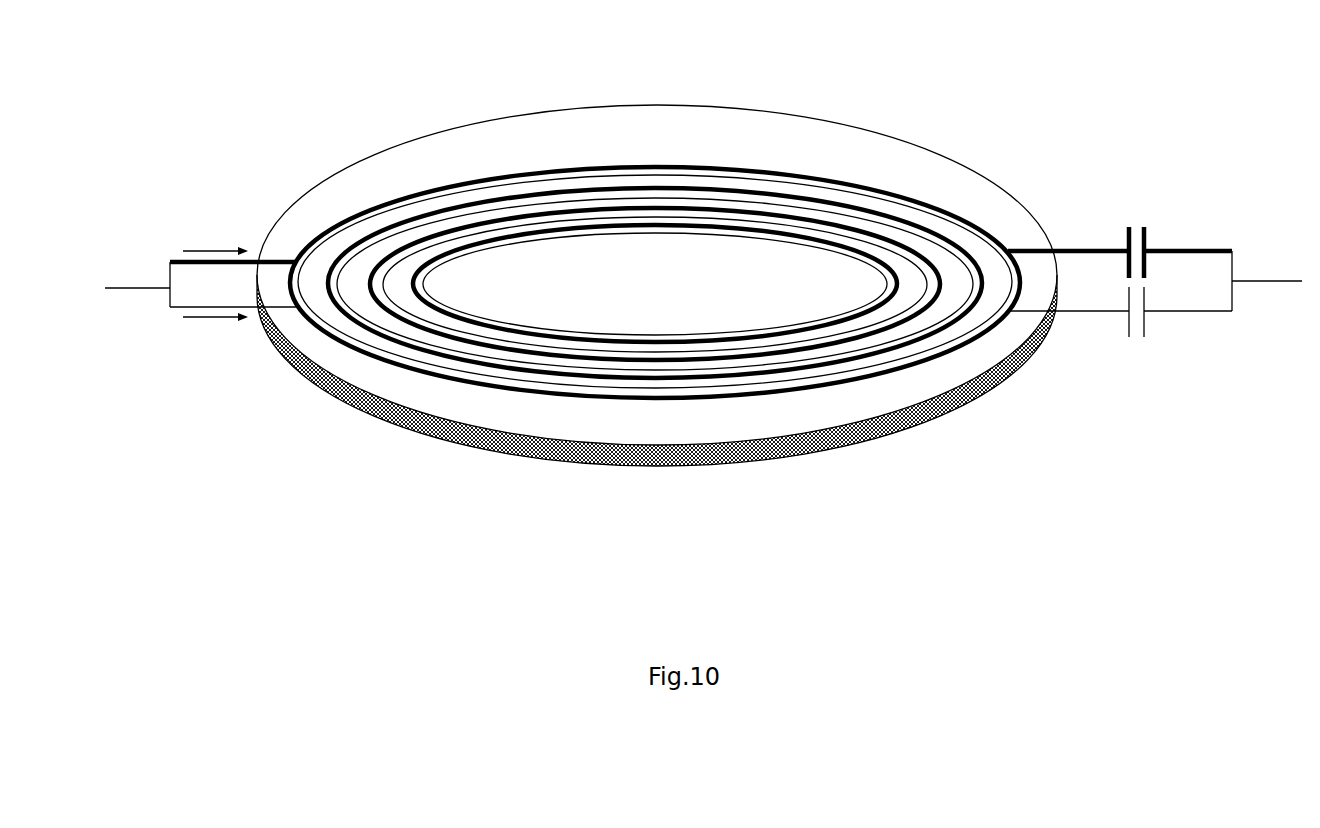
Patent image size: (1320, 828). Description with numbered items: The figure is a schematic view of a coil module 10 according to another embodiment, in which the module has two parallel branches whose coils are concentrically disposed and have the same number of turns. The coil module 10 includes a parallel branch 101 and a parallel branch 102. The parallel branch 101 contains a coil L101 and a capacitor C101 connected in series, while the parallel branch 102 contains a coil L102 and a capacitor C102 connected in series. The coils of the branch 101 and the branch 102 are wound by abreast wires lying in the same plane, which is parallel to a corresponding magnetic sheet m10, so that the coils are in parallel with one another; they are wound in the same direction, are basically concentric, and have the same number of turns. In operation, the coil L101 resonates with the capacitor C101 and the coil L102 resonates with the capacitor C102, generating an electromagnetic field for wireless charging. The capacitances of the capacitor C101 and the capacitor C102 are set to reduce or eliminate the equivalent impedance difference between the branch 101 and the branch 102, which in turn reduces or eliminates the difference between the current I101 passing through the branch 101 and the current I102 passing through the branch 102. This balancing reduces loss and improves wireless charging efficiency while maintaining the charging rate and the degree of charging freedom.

The coil module 10 is at (742, 107).
The magnetic sheet m10 is at (1013, 385).
The coil L102 is at (875, 190).
The coil L101 is at (837, 378).
The parallel branch 102 is at (295, 250).
The parallel branch 101 is at (282, 310).
The current I102 is at (210, 239).
The current I101 is at (213, 332).
The capacitor C102 is at (1155, 247).
The capacitor C101 is at (1121, 329).